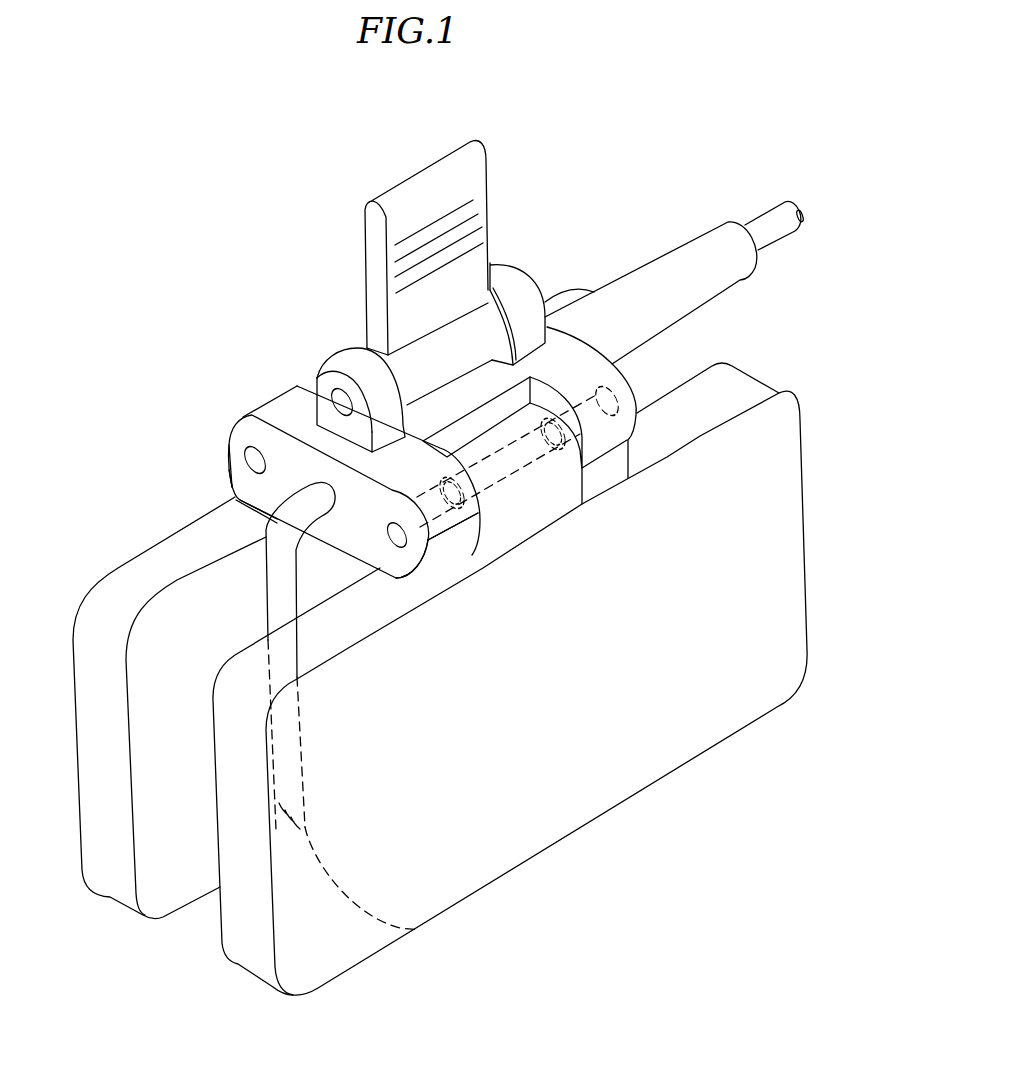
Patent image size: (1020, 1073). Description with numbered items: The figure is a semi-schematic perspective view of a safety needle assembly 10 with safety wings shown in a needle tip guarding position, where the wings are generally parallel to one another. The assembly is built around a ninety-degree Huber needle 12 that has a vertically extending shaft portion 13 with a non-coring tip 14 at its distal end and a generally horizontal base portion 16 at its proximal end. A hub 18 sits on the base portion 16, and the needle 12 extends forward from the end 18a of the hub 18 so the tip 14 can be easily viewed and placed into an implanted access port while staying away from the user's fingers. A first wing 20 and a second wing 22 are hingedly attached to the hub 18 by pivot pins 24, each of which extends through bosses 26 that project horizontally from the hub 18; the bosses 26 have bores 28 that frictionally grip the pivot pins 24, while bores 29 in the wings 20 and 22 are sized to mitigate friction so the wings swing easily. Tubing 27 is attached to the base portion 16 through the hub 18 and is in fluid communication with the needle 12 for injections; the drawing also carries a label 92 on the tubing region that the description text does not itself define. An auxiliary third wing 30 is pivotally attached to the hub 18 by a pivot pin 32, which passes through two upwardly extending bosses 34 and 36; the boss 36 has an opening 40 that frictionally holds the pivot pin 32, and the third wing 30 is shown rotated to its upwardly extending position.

The safety needle assembly 10 is at (427, 677).
The Huber needle 12 is at (427, 677).
The shaft portion 13 is at (300, 737).
The non-coring tip 14 is at (420, 930).
The base portion 16 is at (318, 512).
The hub 18 is at (246, 412).
The end of the hub 18a is at (248, 520).
The first wing 20 is at (142, 557).
The second wing 22 is at (583, 786).
The pivot pins 24 is at (266, 463).
The bosses 26 is at (228, 440).
The tubing 27 is at (764, 213).
The bores 28 is at (229, 481).
The bores 29 is at (515, 475).
The third wing 30 is at (488, 210).
The pivot pin 32 is at (340, 415).
The boss 34 is at (528, 326).
The boss 36 is at (355, 368).
The opening 40 is at (334, 400).
The cable 92 is at (673, 257).